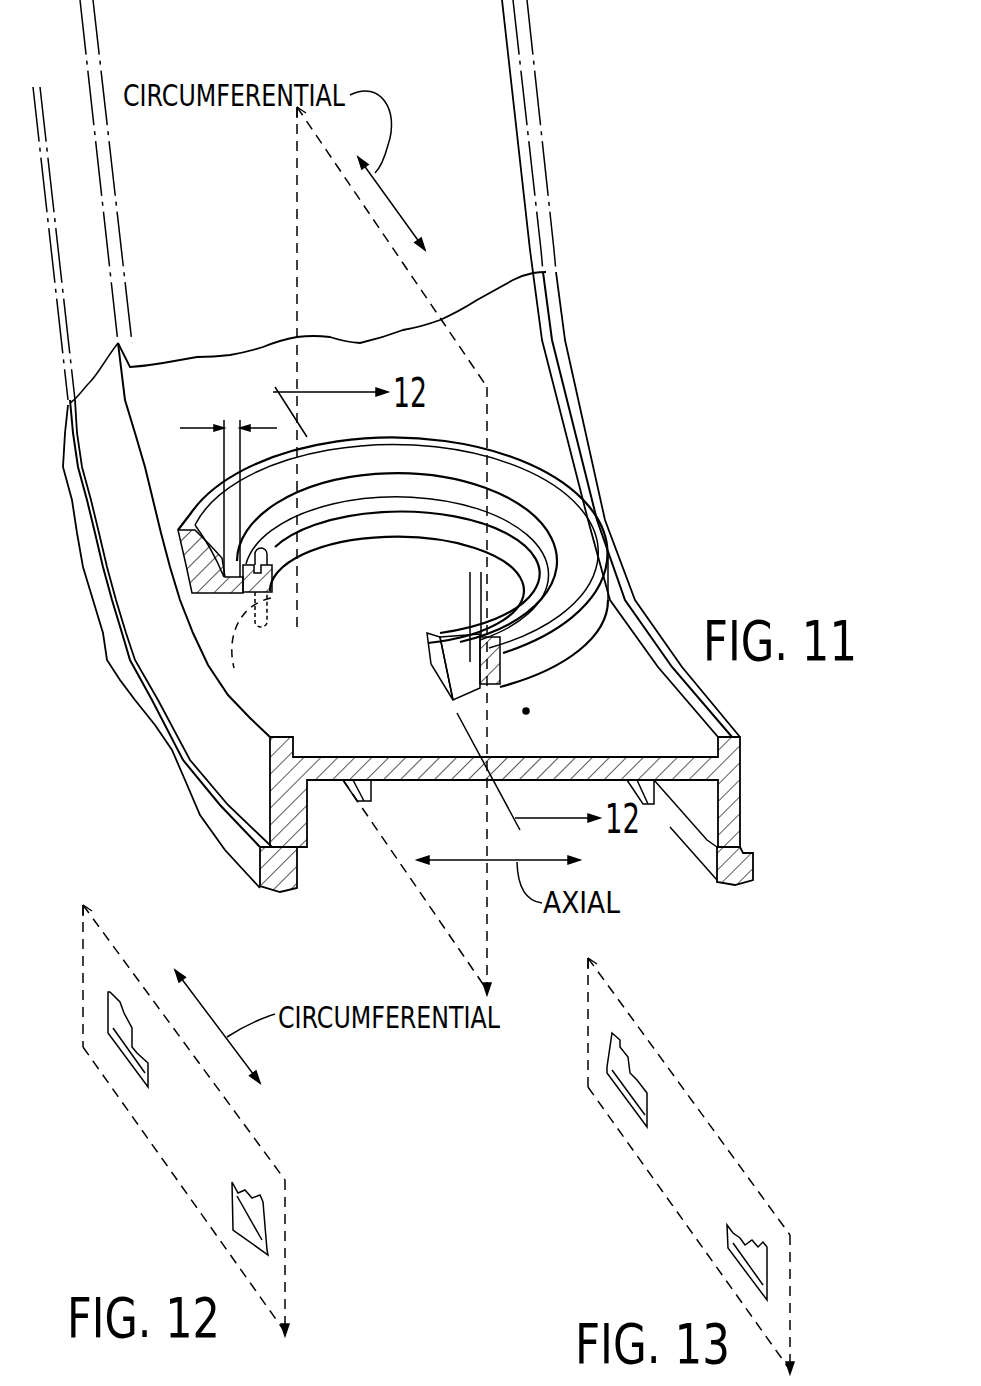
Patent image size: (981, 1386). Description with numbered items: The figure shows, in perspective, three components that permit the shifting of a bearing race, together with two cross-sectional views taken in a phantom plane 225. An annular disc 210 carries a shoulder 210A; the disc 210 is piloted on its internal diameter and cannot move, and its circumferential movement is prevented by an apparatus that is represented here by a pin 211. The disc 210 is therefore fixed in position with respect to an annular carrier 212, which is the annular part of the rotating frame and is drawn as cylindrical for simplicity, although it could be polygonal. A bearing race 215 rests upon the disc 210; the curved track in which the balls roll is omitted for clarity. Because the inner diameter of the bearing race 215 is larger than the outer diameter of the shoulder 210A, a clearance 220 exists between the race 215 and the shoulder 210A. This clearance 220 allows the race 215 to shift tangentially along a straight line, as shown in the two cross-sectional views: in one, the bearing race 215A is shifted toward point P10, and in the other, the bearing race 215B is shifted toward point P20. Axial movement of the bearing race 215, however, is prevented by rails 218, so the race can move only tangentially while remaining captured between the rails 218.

In FIG. 11, the annular disc 210 is at (438, 672).
In FIG. 12, the annular disc 210 is at (227, 1197).
In FIG. 13, the annular disc 210 is at (733, 1227).
In FIG. 11, the shoulder 210A is at (437, 630).
In FIG. 11, the pin 211 is at (240, 661).
In FIG. 11, the annular carrier 212 is at (506, 803).
In FIG. 11, the bearing race 215 is at (600, 593).
In FIG. 12, the bearing race 215A is at (110, 990).
In FIG. 13, the bearing race 215B is at (620, 1040).
In FIG. 11, the rails 218 is at (646, 618).
In FIG. 11, the clearance 220 is at (190, 427).
In FIG. 11, the phantom plane 225 is at (407, 266).
In FIG. 12, the phantom plane 225 is at (186, 1188).
In FIG. 13, the phantom plane 225 is at (690, 1228).
In FIG. 11, the point P10 is at (283, 333).
In FIG. 11, the point P20 is at (528, 710).